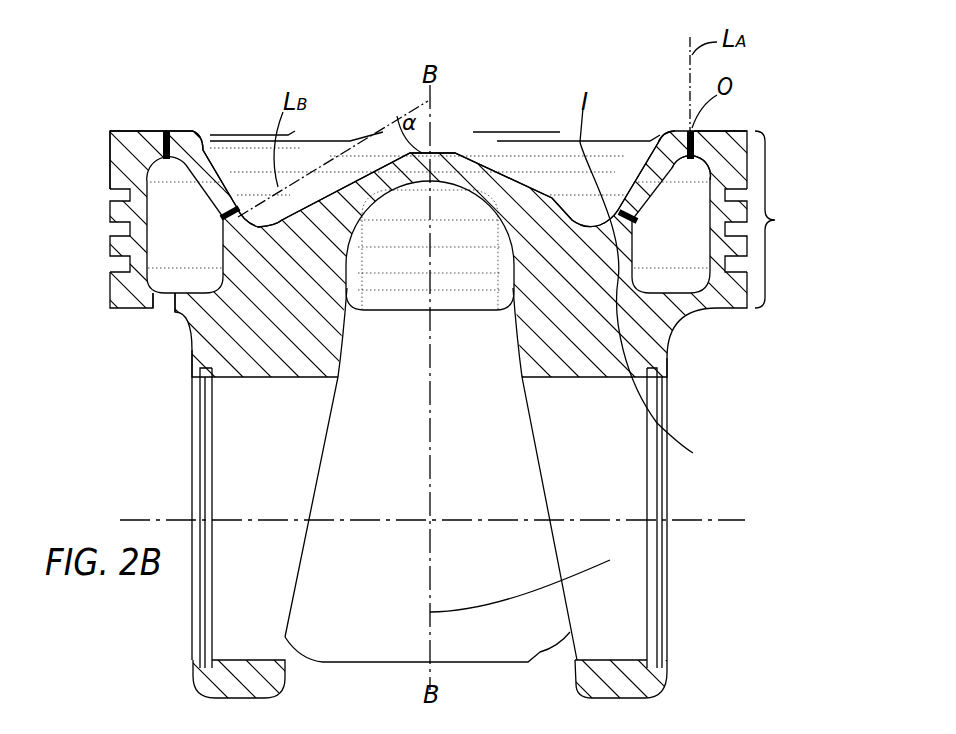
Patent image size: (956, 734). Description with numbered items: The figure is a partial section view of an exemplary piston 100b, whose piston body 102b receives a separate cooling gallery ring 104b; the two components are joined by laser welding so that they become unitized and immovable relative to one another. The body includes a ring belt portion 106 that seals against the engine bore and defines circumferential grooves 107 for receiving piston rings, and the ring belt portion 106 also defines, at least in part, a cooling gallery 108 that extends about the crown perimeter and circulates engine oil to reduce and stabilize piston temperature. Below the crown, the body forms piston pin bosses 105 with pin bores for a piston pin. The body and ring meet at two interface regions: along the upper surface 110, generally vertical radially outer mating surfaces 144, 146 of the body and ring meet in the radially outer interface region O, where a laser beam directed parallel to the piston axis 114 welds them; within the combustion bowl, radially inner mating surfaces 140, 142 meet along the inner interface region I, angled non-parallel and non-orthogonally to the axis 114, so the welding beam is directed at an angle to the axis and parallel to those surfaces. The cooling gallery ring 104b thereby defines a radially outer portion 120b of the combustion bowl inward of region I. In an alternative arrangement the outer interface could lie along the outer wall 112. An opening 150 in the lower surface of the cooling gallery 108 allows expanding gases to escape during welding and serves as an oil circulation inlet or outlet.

The piston 100b is at (222, 44).
The piston body 102b is at (213, 330).
The cooling gallery ring 104b is at (647, 175).
The piston pin bosses 105 is at (240, 680).
The ring belt portion 106 is at (766, 219).
The circumferential grooves 107 is at (120, 260).
The cooling gallery 108 is at (176, 252).
The upper surface 110 is at (687, 128).
The outer wall 112 is at (118, 157).
The piston axis 114 is at (610, 560).
The radially outer portion of the combustion bowl 120b is at (517, 117).
The radially inner mating surface of the body 140 is at (653, 288).
The radially inner mating surface of the ring 142 is at (661, 100).
The radially outer mating surface of the body 144 is at (718, 136).
The radially outer mating surface of the ring 146 is at (638, 218).
The opening 150 is at (165, 305).